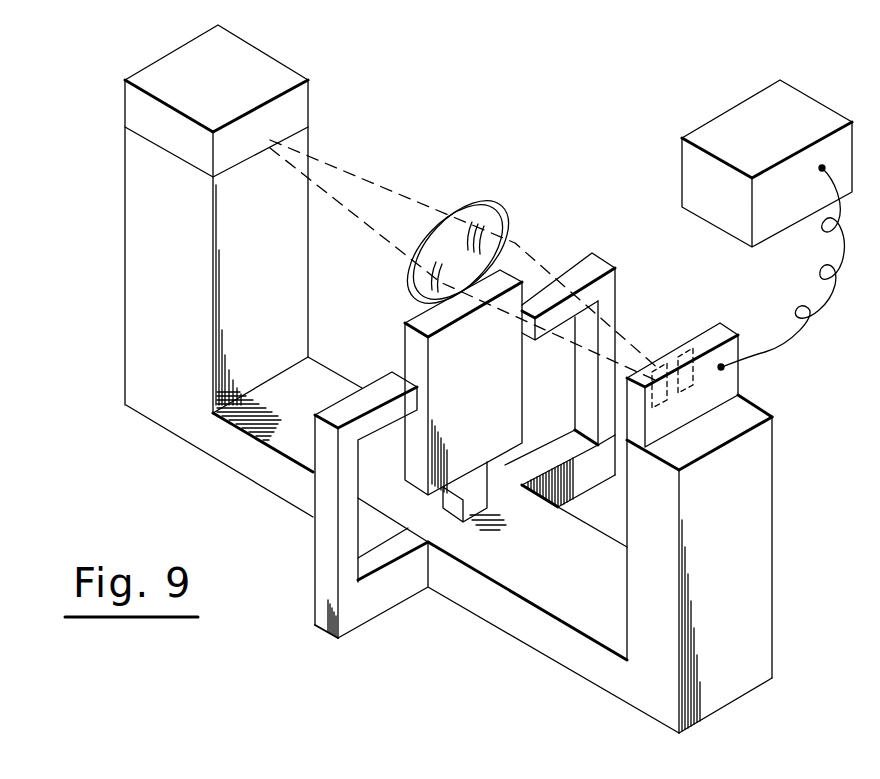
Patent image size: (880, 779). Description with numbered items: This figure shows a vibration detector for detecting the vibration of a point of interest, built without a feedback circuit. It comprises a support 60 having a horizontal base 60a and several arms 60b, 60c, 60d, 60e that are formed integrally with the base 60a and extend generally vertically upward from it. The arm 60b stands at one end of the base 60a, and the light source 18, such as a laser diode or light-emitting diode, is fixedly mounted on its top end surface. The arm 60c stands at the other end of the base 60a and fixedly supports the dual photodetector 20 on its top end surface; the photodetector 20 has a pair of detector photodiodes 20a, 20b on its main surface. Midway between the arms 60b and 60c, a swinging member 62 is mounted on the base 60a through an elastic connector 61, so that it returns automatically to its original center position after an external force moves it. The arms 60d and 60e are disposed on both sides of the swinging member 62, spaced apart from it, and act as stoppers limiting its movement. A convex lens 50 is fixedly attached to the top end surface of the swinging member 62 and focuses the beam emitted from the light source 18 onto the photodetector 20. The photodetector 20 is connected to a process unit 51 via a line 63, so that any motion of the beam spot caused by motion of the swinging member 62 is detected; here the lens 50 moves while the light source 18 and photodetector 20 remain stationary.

The light source 18 is at (183, 61).
The dual photodetector 20 is at (693, 366).
The detector photodiode 20a is at (655, 372).
The detector photodiode 20b is at (684, 350).
The convex lens 50 is at (490, 212).
The process unit 51 is at (700, 130).
The support 60 is at (774, 533).
The horizontal base 60a is at (494, 607).
The arm 60b is at (137, 327).
The arm 60c is at (760, 488).
The arm 60d is at (370, 397).
The arm 60e is at (593, 265).
The elastic connector 61 is at (452, 503).
The swinging member 62 is at (512, 416).
The line 63 is at (815, 268).